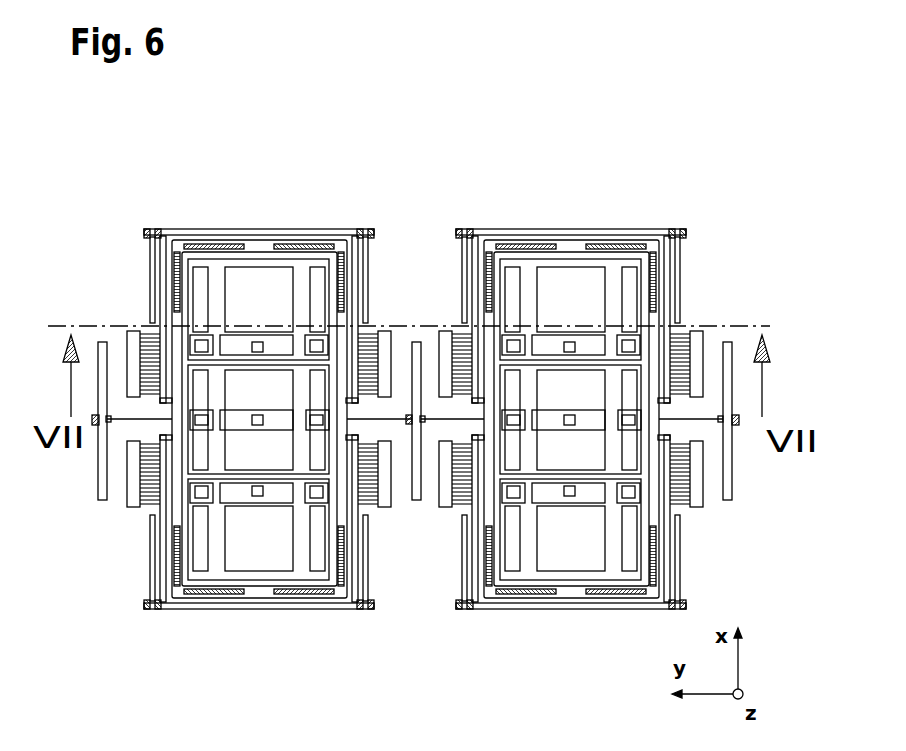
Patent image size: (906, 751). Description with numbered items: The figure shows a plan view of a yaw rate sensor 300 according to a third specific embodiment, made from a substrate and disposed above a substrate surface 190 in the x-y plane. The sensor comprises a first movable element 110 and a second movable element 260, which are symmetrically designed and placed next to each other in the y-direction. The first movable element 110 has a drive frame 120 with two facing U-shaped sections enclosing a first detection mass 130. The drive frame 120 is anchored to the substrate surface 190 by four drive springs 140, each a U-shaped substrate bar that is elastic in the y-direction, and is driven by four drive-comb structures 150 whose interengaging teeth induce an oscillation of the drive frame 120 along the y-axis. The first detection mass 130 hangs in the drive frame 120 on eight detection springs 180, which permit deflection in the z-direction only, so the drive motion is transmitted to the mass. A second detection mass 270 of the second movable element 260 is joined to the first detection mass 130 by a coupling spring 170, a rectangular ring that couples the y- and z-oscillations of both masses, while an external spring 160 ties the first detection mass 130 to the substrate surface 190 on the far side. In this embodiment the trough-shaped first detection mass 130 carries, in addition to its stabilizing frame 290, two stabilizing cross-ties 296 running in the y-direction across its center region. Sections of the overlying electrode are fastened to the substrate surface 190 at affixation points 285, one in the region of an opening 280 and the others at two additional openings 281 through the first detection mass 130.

The yaw rate sensor 300 is at (118, 173).
The first movable element 110 is at (357, 228).
The drive frame 120 is at (304, 239).
The first detection mass 130 is at (255, 262).
The drive spring 140 is at (150, 280).
The drive-comb structure 150 is at (135, 504).
The external spring 160 is at (98, 474).
The coupling spring 170 is at (416, 342).
The detection spring 180 is at (303, 600).
The substrate surface 190 is at (527, 197).
The second movable element 260 is at (655, 228).
The second detection mass 270 is at (596, 262).
The opening 280 is at (273, 432).
The additional opening 281 is at (283, 330).
The affixation point 285 is at (253, 418).
The stabilizing frame 290 is at (330, 543).
The stabilizing cross-tie 296 is at (217, 330).